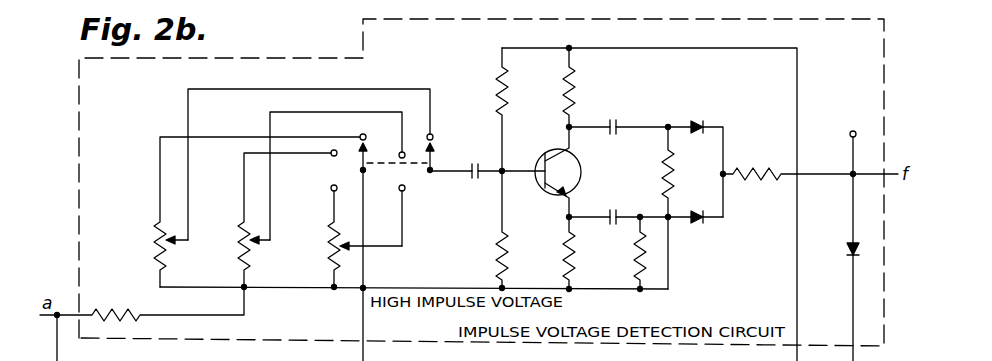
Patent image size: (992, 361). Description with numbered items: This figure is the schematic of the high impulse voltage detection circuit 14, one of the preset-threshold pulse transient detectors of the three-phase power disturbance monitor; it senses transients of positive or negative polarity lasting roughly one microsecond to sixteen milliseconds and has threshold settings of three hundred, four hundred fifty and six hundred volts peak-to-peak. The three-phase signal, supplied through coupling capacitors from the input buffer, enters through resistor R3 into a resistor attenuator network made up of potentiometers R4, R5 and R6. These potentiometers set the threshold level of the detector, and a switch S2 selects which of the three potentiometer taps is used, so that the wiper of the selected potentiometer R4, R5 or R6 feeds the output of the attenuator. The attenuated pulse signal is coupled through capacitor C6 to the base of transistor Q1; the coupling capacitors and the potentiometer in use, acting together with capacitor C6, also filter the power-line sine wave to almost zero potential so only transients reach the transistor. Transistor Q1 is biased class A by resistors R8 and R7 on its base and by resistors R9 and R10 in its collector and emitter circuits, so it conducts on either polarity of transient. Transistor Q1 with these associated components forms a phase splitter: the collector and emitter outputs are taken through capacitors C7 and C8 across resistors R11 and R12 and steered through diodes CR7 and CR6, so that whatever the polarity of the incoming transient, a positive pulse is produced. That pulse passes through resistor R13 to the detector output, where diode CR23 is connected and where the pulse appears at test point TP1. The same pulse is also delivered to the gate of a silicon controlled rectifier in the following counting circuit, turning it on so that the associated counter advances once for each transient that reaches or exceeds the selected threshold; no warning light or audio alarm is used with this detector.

The high impulse voltage detector 14 is at (282, 60).
The resistor R3 is at (142, 318).
The potentiometer R4 is at (277, 188).
The potentiometer R5 is at (307, 199).
The potentiometer R6 is at (350, 239).
The resistor R7 is at (480, 229).
The resistor R8 is at (485, 109).
The resistor R9 is at (556, 87).
The resistor R10 is at (551, 253).
The resistor R11 is at (649, 208).
The resistor R12 is at (622, 253).
The resistor R13 is at (810, 157).
The capacitor C6 is at (487, 154).
The capacitor C7 is at (620, 110).
The capacitor C8 is at (620, 199).
The diode CR6 is at (695, 228).
The diode CR7 is at (695, 159).
The diode CR23 is at (829, 250).
The transistor Q1 is at (554, 172).
The switch S2 is at (386, 203).
The test point TP1 is at (850, 236).